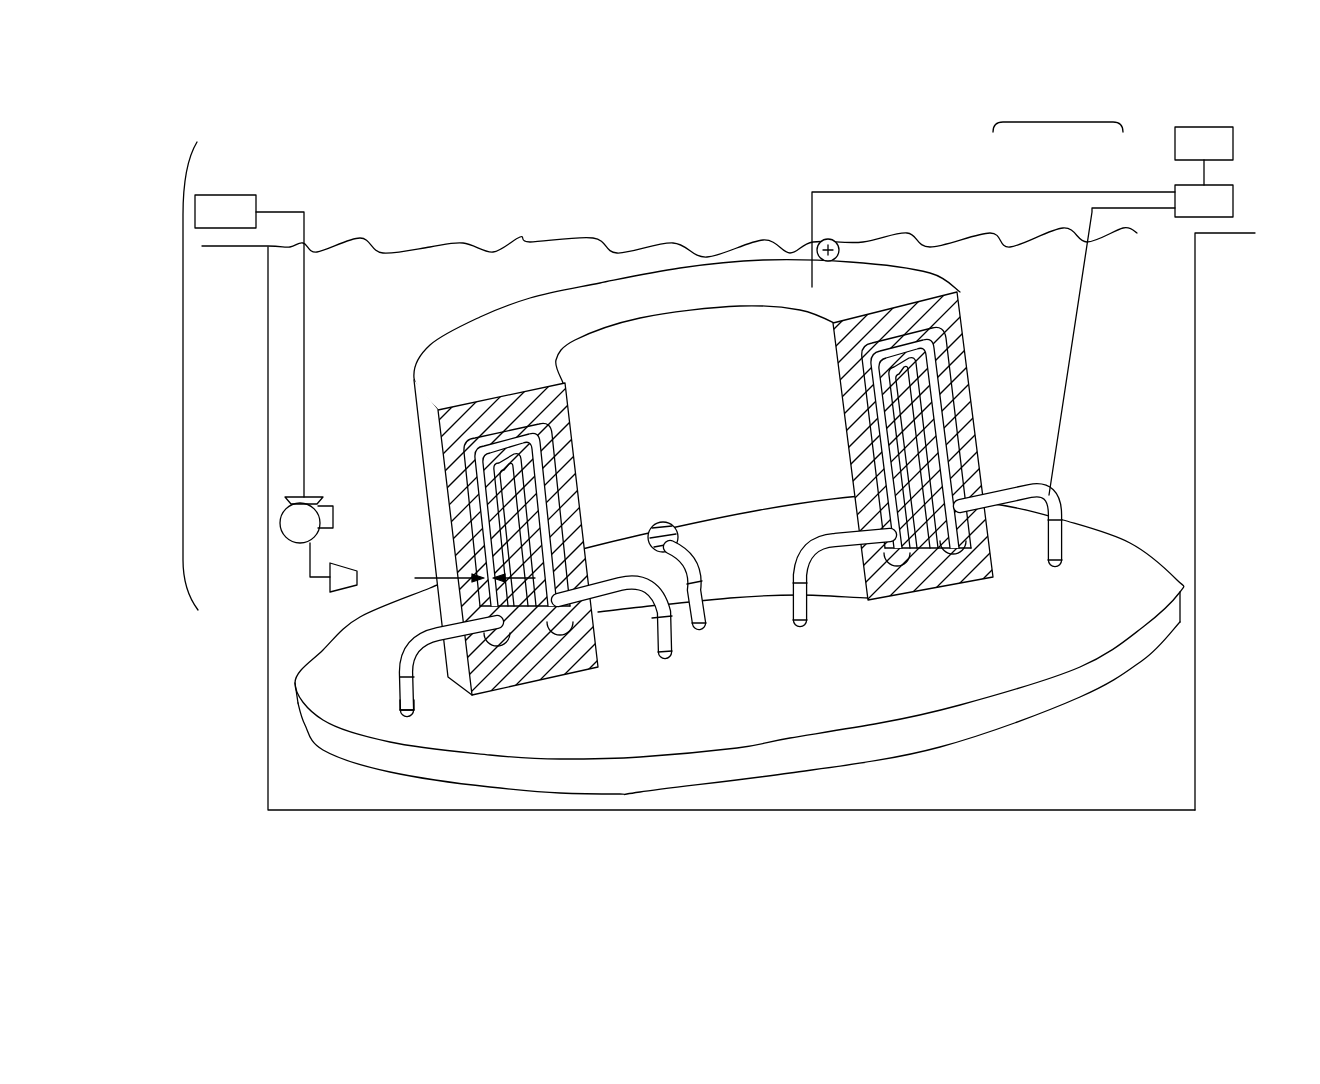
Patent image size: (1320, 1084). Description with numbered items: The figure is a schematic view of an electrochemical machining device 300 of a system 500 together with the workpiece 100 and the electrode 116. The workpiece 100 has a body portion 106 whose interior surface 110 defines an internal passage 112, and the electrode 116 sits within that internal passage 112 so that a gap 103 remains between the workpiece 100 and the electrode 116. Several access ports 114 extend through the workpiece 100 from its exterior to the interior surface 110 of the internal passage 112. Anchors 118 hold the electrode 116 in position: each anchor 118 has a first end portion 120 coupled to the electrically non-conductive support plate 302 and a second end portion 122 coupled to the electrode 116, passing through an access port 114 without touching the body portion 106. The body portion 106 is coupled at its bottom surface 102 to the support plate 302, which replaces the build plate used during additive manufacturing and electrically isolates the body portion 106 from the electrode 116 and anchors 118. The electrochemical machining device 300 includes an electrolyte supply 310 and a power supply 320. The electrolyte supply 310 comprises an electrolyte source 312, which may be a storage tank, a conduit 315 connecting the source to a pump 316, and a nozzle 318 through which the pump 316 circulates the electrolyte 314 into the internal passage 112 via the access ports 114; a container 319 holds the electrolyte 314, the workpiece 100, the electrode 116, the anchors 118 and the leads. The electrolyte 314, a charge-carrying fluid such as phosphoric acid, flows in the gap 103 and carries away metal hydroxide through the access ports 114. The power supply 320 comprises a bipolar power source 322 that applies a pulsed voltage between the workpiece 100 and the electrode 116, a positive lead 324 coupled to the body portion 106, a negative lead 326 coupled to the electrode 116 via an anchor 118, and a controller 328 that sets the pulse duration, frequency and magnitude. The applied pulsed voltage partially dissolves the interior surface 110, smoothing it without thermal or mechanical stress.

The workpiece 100 is at (476, 308).
The bottom surface 102 is at (905, 597).
The gap 103 is at (478, 590).
The body portion 106 is at (442, 432).
The interior surface 110 is at (512, 532).
The internal passage 112 is at (572, 642).
The access port 114 is at (834, 510).
The electrode 116 is at (945, 352).
The anchor 118 is at (399, 672).
The first end portion 120 is at (414, 712).
The second end portion 122 is at (525, 662).
The electrochemical machining device 300 is at (713, 168).
The support plate 302 is at (1080, 688).
The electrolyte supply 310 is at (183, 378).
The electrolyte source 312 is at (240, 195).
The electrolyte 314 is at (1165, 486).
The conduit 315 is at (306, 345).
The pump 316 is at (281, 525).
The nozzle 318 is at (335, 595).
The container 319 is at (1198, 312).
The power supply 320 is at (1058, 122).
The power source 322 is at (1175, 188).
The positive lead 324 is at (988, 192).
The negative lead 326 is at (1068, 352).
The controller 328 is at (1175, 137).
The system 500 is at (853, 109).